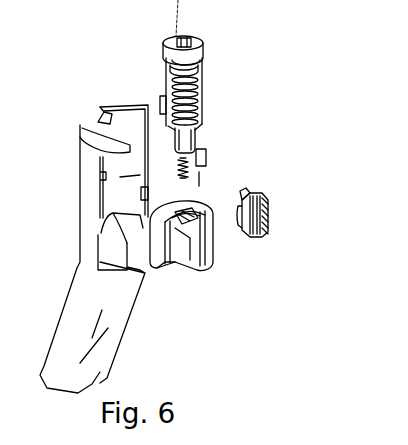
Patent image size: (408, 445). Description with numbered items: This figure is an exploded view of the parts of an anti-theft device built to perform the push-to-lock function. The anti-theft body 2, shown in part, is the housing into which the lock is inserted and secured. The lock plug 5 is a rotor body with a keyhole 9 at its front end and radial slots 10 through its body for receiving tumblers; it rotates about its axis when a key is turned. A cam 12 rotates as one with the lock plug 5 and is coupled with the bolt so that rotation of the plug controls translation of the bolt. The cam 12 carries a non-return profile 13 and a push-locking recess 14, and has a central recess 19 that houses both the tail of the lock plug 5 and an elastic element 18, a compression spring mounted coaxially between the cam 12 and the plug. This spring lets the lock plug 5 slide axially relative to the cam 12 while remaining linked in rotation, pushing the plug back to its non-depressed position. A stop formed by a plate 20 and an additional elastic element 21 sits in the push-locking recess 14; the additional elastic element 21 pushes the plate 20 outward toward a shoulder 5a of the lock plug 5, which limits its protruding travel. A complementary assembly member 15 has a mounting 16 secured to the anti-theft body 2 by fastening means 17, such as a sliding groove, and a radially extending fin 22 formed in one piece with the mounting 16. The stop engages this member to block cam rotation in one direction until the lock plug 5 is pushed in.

The anti-theft body 2 is at (80, 158).
The lock plug 5 is at (213, 81).
The shoulder 5a is at (202, 126).
The keyhole 9 is at (185, 37).
The radial slots 10 is at (190, 96).
The cam 12 is at (180, 290).
The non-return profile 13 is at (181, 208).
The push-locking recess 14 is at (196, 208).
The complementary assembly member 15 is at (266, 189).
The mounting 16 is at (246, 192).
The fastening means 17 is at (264, 218).
The elastic element 18 is at (178, 172).
The central recess 19 is at (188, 268).
The plate 20 is at (207, 158).
The additional elastic element 21 is at (202, 182).
The fin 22 is at (243, 228).